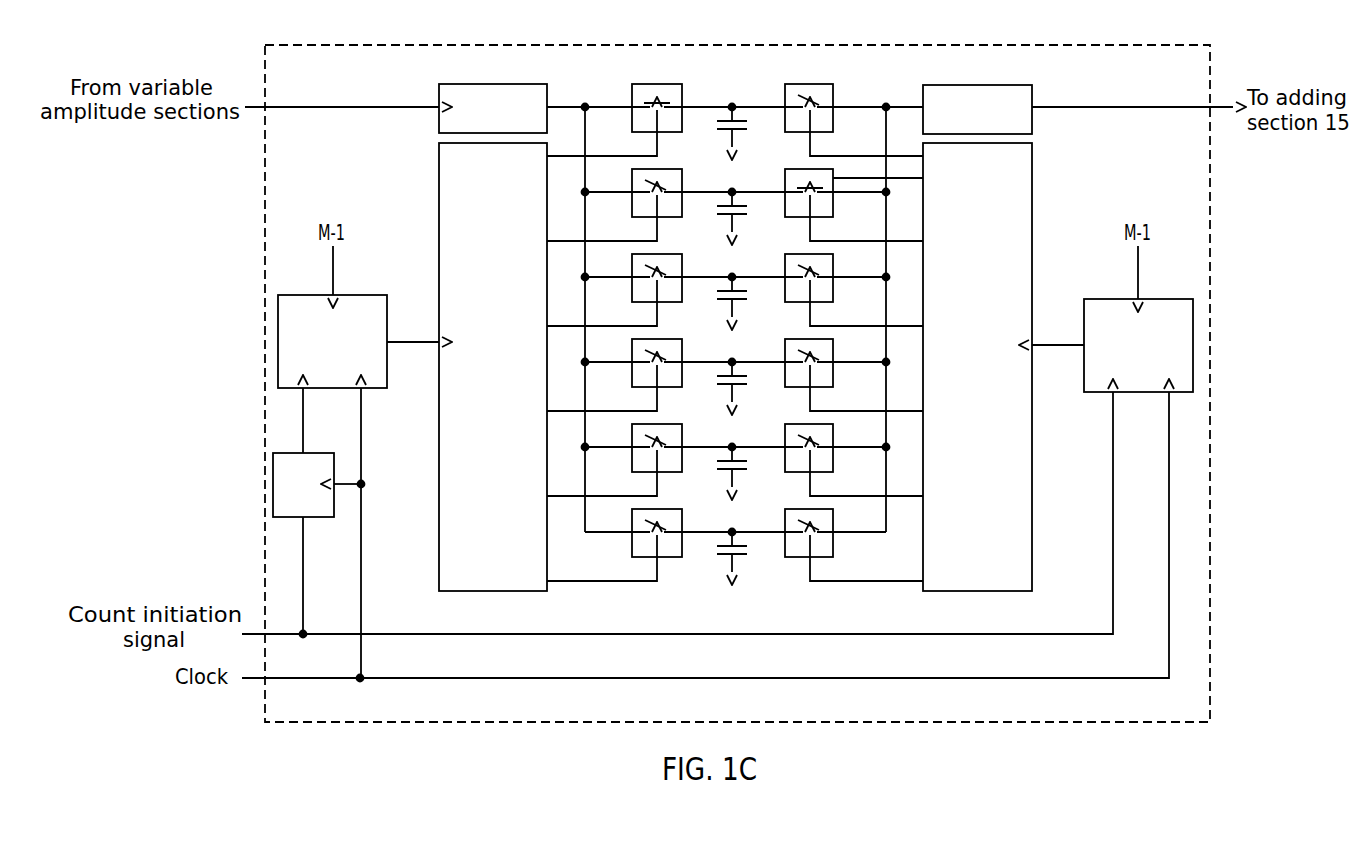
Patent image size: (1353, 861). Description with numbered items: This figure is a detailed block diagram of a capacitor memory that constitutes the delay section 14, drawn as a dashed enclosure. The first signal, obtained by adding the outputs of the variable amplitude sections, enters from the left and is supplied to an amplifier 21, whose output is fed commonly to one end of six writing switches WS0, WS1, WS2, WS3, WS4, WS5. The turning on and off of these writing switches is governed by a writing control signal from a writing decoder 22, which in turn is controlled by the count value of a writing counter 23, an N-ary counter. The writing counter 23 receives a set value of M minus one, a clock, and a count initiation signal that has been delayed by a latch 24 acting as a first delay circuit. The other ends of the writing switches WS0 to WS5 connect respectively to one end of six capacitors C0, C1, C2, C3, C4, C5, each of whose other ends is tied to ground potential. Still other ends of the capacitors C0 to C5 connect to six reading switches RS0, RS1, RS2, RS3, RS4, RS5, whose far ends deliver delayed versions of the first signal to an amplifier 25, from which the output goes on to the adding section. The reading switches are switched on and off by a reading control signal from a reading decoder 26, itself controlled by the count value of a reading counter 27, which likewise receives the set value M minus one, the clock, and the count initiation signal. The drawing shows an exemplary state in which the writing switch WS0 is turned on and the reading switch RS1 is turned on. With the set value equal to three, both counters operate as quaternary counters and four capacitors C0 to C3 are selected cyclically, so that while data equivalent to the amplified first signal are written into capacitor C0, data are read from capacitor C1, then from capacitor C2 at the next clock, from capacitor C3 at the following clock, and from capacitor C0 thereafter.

The delay section 14 is at (1108, 47).
The amplifier 21 is at (533, 84).
The writing decoder 22 is at (439, 172).
The writing counter 23 is at (365, 295).
The latch 24 is at (322, 453).
The amplifier 25 is at (1010, 85).
The reading decoder 26 is at (1032, 172).
The reading counter 27 is at (1160, 299).
The writing switch WS0 is at (665, 134).
The writing switch WS1 is at (665, 219).
The writing switch WS2 is at (665, 304).
The writing switch WS3 is at (665, 389).
The writing switch WS4 is at (665, 474).
The writing switch WS5 is at (665, 559).
The capacitor C0 is at (748, 125).
The capacitor C1 is at (748, 210).
The capacitor C2 is at (748, 295).
The capacitor C3 is at (748, 380).
The capacitor C4 is at (748, 465).
The capacitor C5 is at (748, 550).
The reading switch RS0 is at (818, 134).
The reading switch RS1 is at (818, 219).
The reading switch RS2 is at (818, 304).
The reading switch RS3 is at (818, 389).
The reading switch RS4 is at (818, 474).
The reading switch RS5 is at (818, 559).